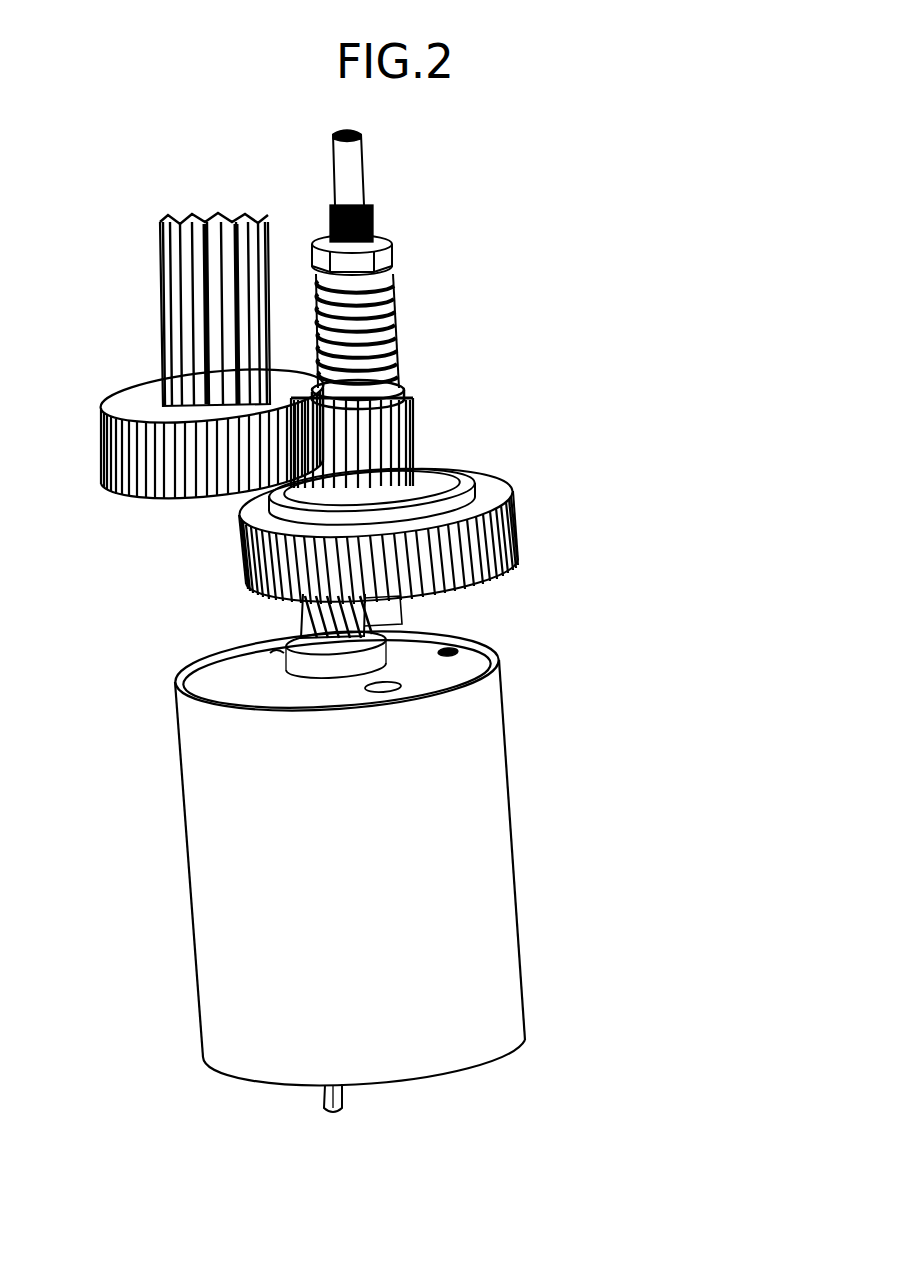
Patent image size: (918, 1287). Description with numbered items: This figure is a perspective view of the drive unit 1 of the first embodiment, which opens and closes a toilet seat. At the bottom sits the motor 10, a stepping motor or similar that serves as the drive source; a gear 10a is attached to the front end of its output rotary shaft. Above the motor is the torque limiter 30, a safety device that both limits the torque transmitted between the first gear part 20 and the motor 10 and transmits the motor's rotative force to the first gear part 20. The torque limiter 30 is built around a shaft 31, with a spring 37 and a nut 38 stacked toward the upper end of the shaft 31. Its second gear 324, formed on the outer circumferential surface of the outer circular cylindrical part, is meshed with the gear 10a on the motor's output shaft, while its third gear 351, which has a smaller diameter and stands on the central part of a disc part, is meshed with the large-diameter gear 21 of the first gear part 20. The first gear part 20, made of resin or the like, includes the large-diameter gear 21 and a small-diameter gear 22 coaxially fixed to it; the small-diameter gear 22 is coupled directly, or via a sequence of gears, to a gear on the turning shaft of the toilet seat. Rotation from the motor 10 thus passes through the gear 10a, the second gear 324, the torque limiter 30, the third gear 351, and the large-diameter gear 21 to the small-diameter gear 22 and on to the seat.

The drive unit 1 is at (723, 297).
The motor 10 is at (532, 857).
The gear 10a is at (302, 612).
The first gear part 20 is at (177, 356).
The large-diameter gear 21 is at (101, 458).
The small-diameter gear 22 is at (178, 256).
The torque limiter 30 is at (406, 381).
The shaft 31 is at (350, 182).
The spring 37 is at (383, 310).
The nut 38 is at (392, 249).
The second gear 324 is at (500, 578).
The third gear 351 is at (402, 436).